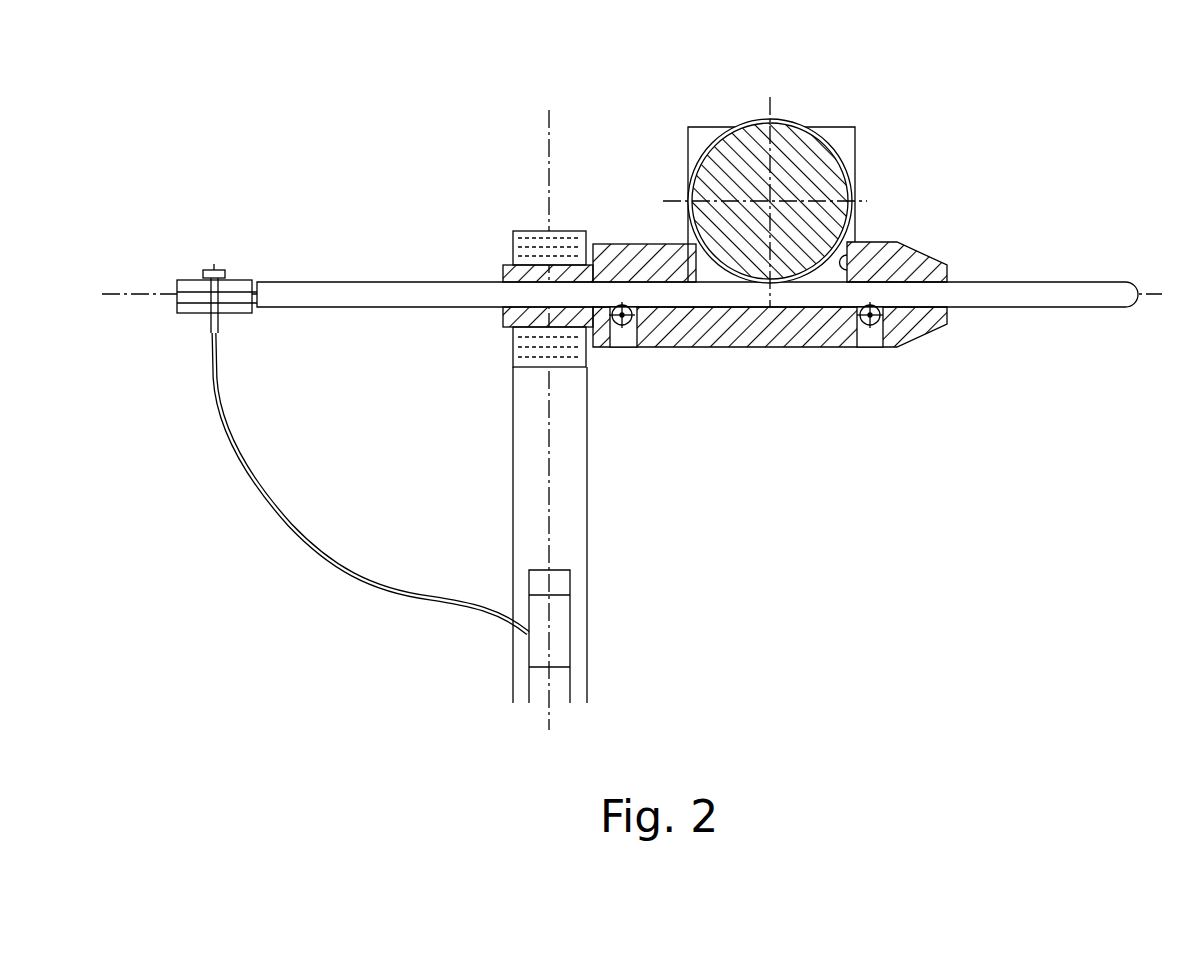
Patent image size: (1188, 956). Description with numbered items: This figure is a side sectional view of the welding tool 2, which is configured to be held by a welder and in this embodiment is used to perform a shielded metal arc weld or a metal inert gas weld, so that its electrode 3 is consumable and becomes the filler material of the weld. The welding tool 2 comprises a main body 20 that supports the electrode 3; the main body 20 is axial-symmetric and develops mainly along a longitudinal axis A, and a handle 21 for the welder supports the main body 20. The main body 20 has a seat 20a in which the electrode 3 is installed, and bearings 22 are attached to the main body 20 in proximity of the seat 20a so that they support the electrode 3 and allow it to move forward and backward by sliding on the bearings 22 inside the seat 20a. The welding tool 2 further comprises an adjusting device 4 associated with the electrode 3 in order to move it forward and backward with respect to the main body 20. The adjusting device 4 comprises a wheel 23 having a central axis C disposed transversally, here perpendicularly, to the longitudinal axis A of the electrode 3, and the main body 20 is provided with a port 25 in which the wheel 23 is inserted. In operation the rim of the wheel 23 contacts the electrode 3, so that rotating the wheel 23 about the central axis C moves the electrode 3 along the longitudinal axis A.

The welding tool 2 is at (377, 117).
The electrode 3 is at (1040, 282).
The adjusting device 4 is at (733, 114).
The central axis C is at (781, 198).
The longitudinal axis A is at (1110, 293).
The main body 20 is at (928, 254).
The seat 20a is at (748, 312).
The handle 21 is at (587, 486).
The bearings 22 is at (618, 325).
The wheel 23 is at (840, 150).
The port 25 is at (864, 243).